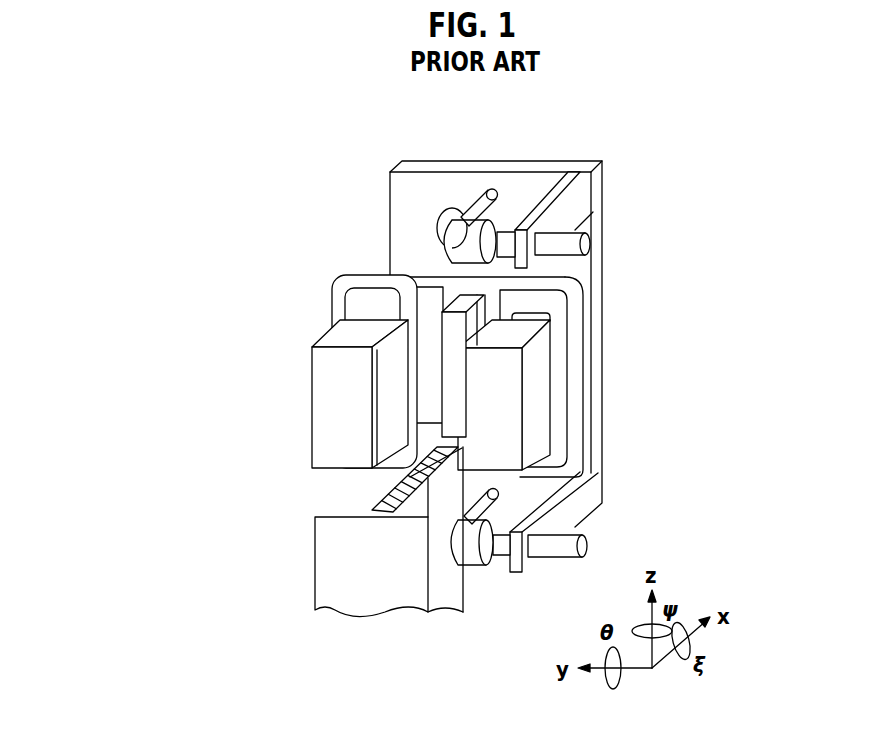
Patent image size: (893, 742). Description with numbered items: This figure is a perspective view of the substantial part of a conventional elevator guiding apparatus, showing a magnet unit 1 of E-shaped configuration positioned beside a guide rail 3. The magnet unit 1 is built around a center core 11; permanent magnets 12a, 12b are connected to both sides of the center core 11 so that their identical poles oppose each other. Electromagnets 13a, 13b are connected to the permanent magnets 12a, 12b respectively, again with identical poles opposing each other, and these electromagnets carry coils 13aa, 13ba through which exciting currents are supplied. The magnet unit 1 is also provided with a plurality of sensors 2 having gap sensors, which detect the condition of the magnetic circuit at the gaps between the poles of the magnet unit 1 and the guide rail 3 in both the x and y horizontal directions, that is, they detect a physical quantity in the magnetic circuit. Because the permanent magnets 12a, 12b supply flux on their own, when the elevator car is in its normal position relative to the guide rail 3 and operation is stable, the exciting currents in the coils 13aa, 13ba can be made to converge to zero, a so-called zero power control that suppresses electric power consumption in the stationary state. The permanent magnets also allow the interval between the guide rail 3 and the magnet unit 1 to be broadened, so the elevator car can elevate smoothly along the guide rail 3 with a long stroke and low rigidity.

The magnet unit 1 is at (296, 344).
The sensors 2 is at (482, 190).
The guide rail 3 is at (316, 536).
The center core 11 is at (470, 297).
The permanent magnet 12a is at (493, 313).
The permanent magnet 12b is at (427, 283).
The electromagnet 13a is at (537, 437).
The coil 13aa is at (578, 402).
The electromagnet 13b is at (330, 381).
The coil 13ba is at (347, 279).